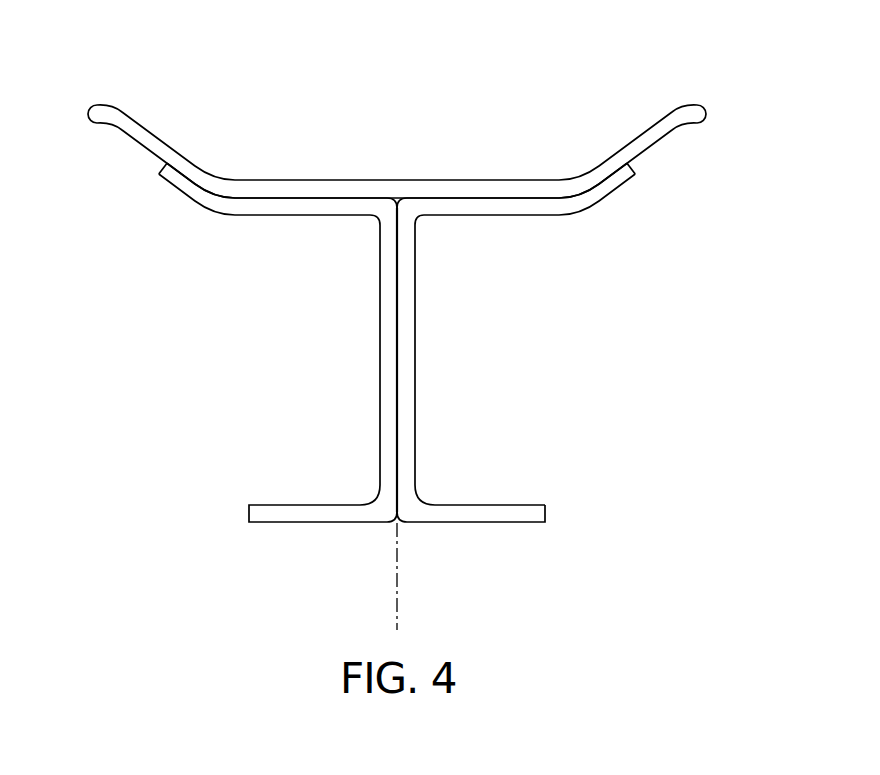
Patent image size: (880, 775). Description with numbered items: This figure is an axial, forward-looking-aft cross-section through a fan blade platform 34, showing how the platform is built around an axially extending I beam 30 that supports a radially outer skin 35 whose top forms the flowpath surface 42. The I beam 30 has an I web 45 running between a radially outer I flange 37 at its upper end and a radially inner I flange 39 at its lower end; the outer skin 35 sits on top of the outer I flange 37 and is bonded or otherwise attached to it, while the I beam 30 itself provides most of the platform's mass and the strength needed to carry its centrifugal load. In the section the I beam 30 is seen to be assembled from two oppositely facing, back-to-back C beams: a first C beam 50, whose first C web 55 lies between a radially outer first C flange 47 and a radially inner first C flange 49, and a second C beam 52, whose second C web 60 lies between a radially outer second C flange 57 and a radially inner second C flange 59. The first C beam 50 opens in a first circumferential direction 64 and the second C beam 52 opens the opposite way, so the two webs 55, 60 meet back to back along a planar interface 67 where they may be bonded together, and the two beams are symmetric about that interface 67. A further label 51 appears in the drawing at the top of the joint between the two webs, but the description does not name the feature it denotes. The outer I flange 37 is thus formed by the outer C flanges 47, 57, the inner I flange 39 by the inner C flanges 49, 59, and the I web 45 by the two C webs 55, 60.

The I beam 30 is at (397, 330).
The platform 34 is at (253, 272).
The radially outer I flange 37 is at (516, 361).
The radially outer skin 35 is at (530, 178).
The flowpath surface 42 is at (212, 178).
The radially outer second C flange 57 is at (295, 216).
The radially outer first C flange 47 is at (467, 216).
The second C beam 52 is at (377, 206).
The web joint 51 is at (402, 206).
The first C beam 50 is at (437, 206).
The second C web 60 is at (380, 358).
The first circumferential direction 64 is at (698, 81).
The I web 45 is at (416, 358).
The first C web 55 is at (416, 423).
The radially inner second C flange 59 is at (288, 504).
The radially inner first C flange 49 is at (478, 504).
The radially inner I flange 39 is at (507, 523).
The planar interface 67 is at (393, 519).